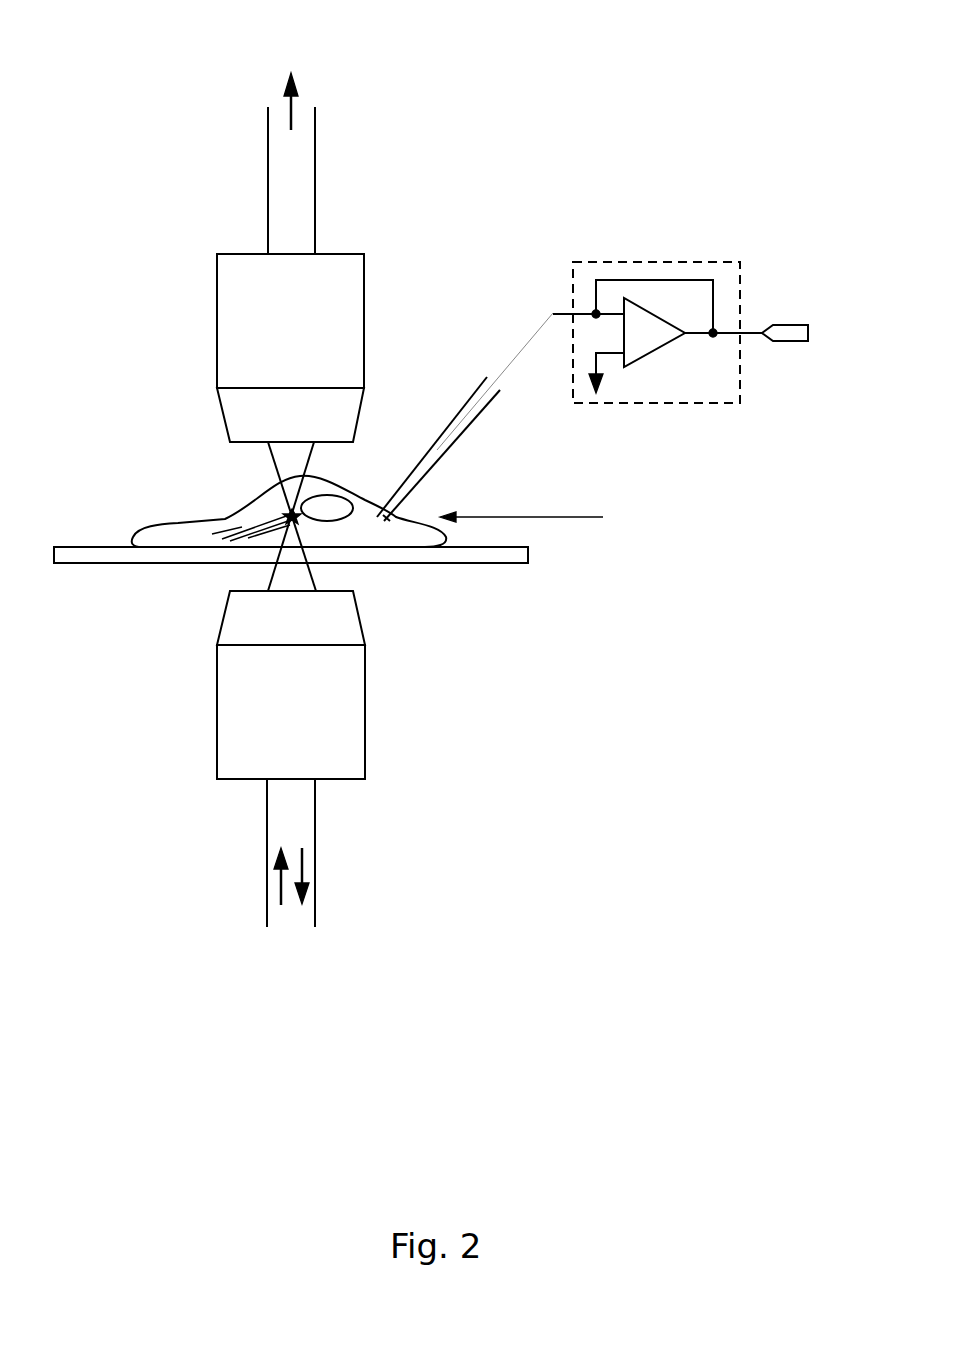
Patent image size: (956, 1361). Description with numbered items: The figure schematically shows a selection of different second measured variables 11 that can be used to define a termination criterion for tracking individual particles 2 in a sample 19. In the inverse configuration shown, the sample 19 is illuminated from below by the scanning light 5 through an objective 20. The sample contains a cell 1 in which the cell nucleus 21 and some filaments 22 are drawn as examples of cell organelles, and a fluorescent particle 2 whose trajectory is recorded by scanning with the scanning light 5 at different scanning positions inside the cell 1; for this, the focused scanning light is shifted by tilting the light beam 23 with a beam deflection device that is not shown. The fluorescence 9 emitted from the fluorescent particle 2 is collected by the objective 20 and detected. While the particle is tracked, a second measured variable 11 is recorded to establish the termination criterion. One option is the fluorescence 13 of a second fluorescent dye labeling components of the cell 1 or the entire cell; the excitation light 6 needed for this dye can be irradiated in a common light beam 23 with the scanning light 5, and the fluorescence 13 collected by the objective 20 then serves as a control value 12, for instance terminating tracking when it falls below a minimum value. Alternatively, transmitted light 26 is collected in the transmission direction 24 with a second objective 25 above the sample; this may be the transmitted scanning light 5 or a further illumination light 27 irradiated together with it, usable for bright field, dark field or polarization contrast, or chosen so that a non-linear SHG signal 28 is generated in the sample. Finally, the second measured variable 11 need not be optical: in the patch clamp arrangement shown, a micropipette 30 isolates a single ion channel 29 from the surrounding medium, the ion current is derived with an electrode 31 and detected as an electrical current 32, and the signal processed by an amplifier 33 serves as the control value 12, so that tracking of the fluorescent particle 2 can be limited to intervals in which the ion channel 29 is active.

The cell 1 is at (237, 493).
The fluorescent particle 2 is at (233, 547).
The scanning light 5 is at (204, 895).
The excitation light 6 is at (204, 895).
The fluorescence 9 is at (322, 860).
The second measured variable 11 is at (530, 323).
The control value 12 is at (788, 322).
The fluorescence of second fluorescent dye 13 is at (217, 860).
The sample 19 is at (537, 520).
The objective 20 is at (368, 705).
The cell nucleus 21 is at (343, 507).
The filaments 22 is at (197, 522).
The light beam 23 is at (204, 895).
The transmission direction 24 is at (332, 93).
The second objective 25 is at (212, 325).
The transmitted light 26 is at (227, 155).
The illumination light 27 is at (277, 880).
The SHG signal 28 is at (324, 155).
The ion channel 29 is at (387, 519).
The micropipette 30 is at (467, 433).
The electrode 31 is at (508, 362).
The electrical current 32 is at (530, 361).
The amplifier 33 is at (652, 262).